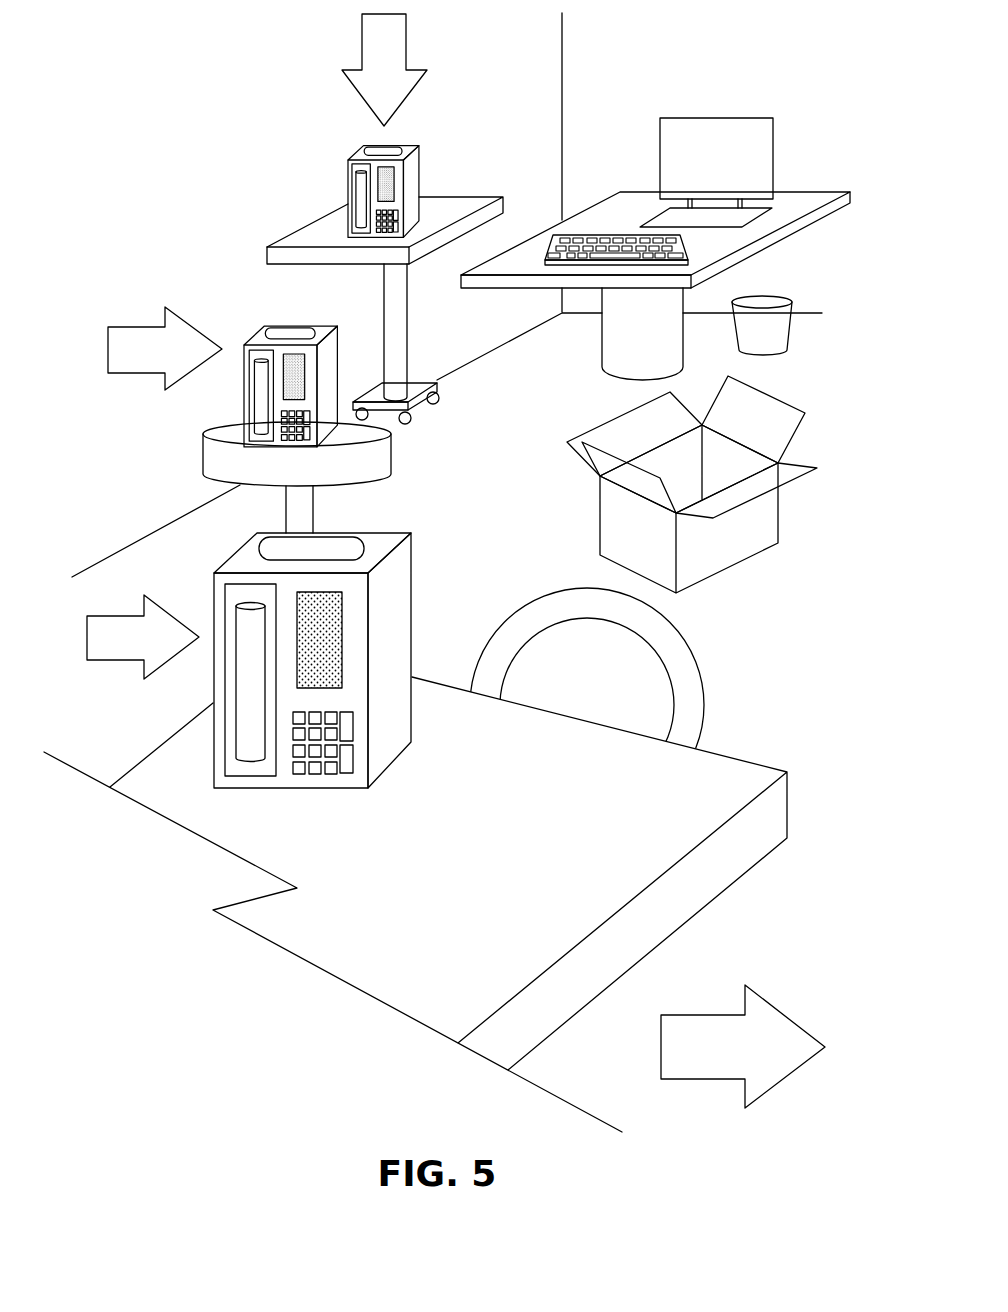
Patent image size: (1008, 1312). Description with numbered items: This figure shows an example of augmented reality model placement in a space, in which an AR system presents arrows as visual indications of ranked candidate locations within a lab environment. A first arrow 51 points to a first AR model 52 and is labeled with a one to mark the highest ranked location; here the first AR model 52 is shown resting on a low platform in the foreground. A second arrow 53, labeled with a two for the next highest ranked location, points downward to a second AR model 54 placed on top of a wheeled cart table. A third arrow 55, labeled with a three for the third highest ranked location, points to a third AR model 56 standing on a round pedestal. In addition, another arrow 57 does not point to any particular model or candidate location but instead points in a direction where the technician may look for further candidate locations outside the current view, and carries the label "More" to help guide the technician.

The first arrow 51 is at (120, 661).
The first AR model 52 is at (373, 533).
The second arrow 53 is at (360, 55).
The second AR model 54 is at (419, 175).
The third arrow 55 is at (131, 326).
The third AR model 56 is at (277, 325).
The another arrow 57 is at (715, 1013).